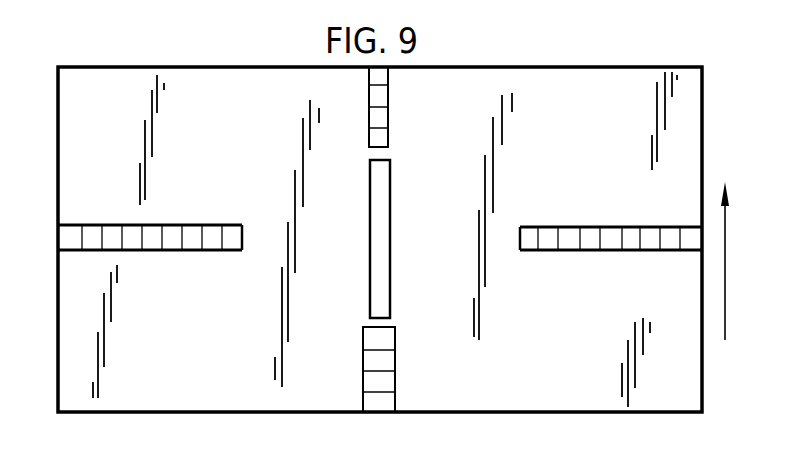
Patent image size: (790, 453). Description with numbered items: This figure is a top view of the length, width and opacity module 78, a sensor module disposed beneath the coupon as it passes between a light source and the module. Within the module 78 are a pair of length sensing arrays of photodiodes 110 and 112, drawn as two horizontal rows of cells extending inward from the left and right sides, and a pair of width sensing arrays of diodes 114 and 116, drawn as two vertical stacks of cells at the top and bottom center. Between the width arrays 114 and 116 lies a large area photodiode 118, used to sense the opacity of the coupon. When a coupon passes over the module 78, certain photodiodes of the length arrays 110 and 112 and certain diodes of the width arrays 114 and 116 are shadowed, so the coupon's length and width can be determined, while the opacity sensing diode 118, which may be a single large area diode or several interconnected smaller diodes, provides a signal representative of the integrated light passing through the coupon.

The length, width and opacity module 78 is at (677, 115).
The length sensing array of photodiodes 110 is at (139, 255).
The length sensing array of photodiodes 112 is at (638, 253).
The width sensing array of diodes 114 is at (389, 97).
The width sensing array of diodes 116 is at (396, 375).
The large area photodiode 118 is at (372, 231).